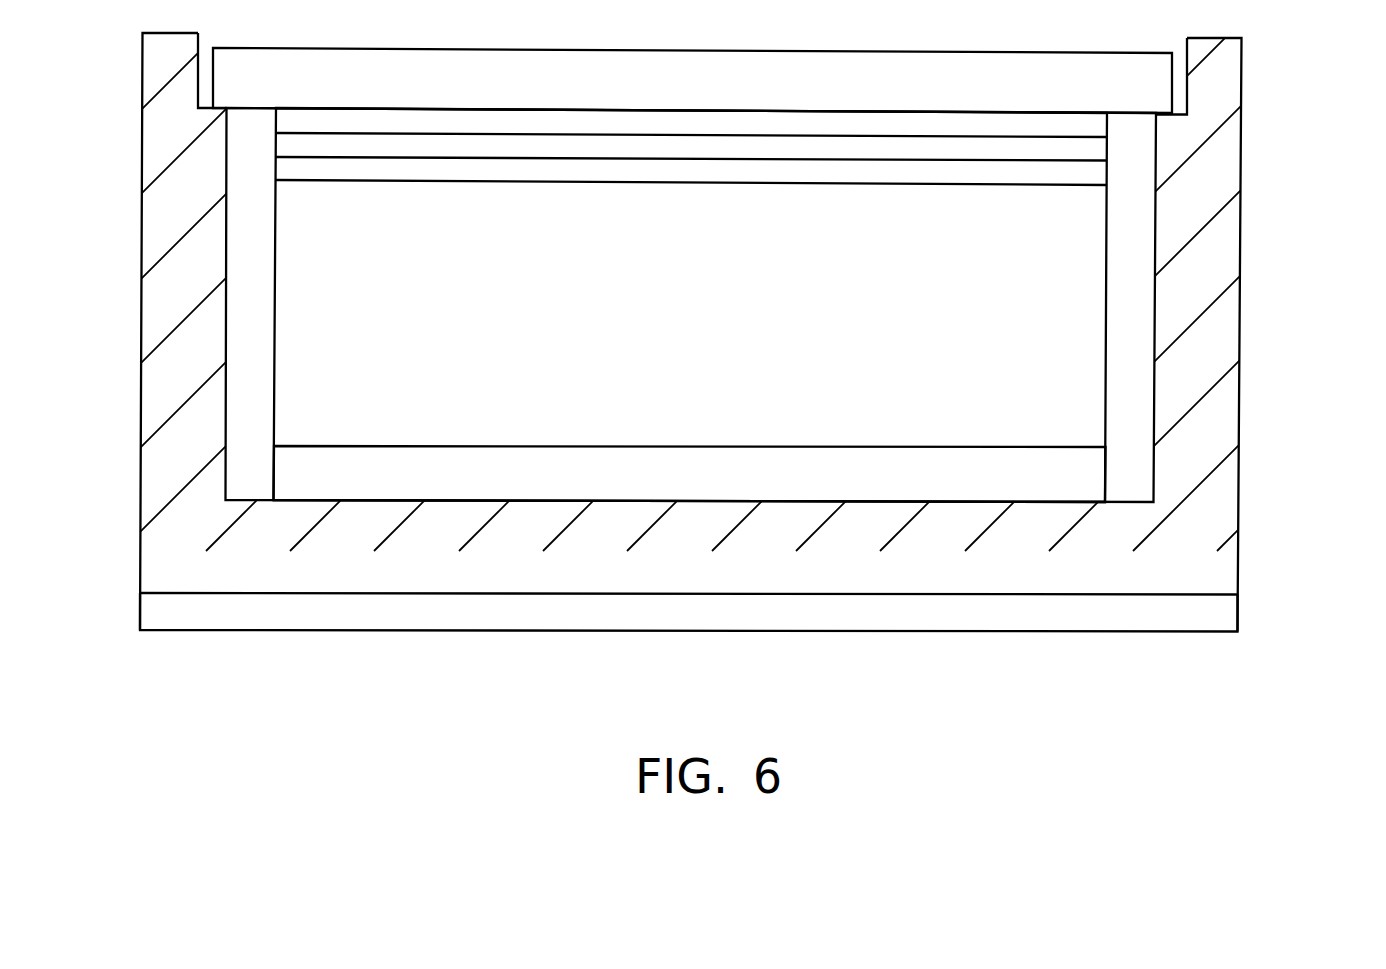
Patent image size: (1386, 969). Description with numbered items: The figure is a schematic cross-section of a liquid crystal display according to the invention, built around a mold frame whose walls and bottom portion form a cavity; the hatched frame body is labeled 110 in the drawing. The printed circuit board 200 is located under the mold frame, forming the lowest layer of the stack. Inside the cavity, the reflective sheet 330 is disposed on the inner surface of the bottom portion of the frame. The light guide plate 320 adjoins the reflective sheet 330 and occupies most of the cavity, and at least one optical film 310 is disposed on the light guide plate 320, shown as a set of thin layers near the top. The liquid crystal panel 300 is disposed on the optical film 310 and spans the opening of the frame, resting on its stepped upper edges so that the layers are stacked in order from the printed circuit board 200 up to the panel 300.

The substrate 110 is at (1212, 546).
The printed circuit board 200 is at (1212, 615).
The liquid crystal panel 300 is at (1157, 83).
The optical film 310 is at (1124, 188).
The light guide plate 320 is at (1088, 317).
The reflective sheet 330 is at (1088, 472).